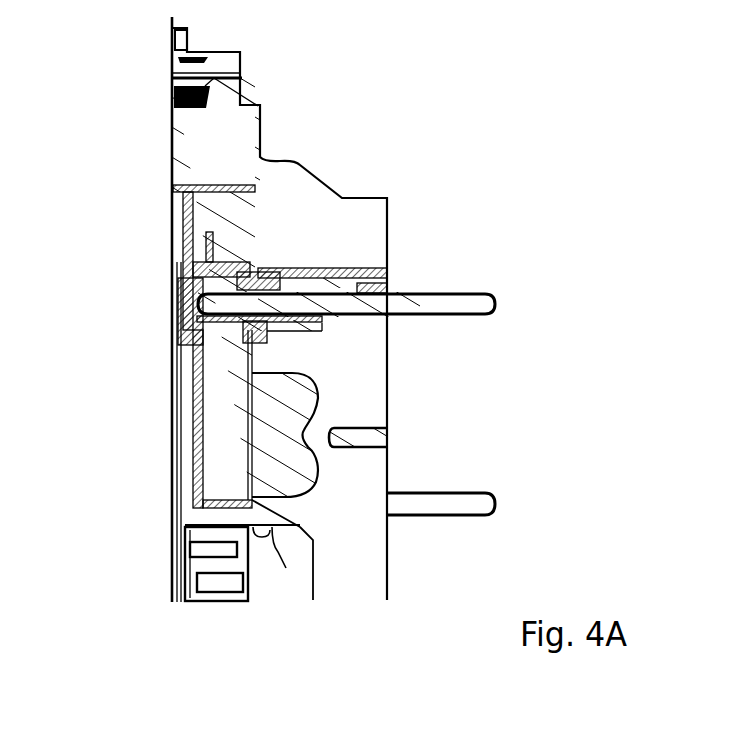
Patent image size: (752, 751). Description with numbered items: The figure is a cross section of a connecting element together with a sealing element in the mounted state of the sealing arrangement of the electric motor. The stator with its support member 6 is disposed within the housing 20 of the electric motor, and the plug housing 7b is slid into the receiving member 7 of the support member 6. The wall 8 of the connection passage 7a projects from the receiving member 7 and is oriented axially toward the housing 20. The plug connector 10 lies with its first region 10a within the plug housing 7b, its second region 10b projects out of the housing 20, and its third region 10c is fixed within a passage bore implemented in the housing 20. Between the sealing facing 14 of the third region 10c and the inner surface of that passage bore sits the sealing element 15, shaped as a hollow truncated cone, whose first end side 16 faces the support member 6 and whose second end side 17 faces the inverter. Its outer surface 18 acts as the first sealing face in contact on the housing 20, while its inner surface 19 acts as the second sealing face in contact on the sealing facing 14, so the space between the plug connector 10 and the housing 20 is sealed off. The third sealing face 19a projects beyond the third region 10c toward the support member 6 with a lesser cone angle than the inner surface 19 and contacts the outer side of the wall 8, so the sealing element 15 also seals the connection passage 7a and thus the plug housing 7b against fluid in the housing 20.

The support member 6 is at (200, 336).
The receiving member 7 is at (214, 257).
The connection passage 7a is at (263, 290).
The plug housing 7b is at (206, 320).
The wall 8 is at (247, 330).
The plug connector 10 is at (457, 303).
The first region 10a is at (227, 303).
The second region 10b is at (404, 303).
The third region 10c is at (319, 307).
The sealing facing 14 is at (297, 325).
The sealing element 15 is at (323, 278).
The first end side 16 is at (265, 288).
The second end side 17 is at (367, 277).
The outer surface 18 is at (362, 268).
The inner surface 19 is at (294, 327).
The third sealing face 19a is at (268, 325).
The housing 20 is at (368, 558).